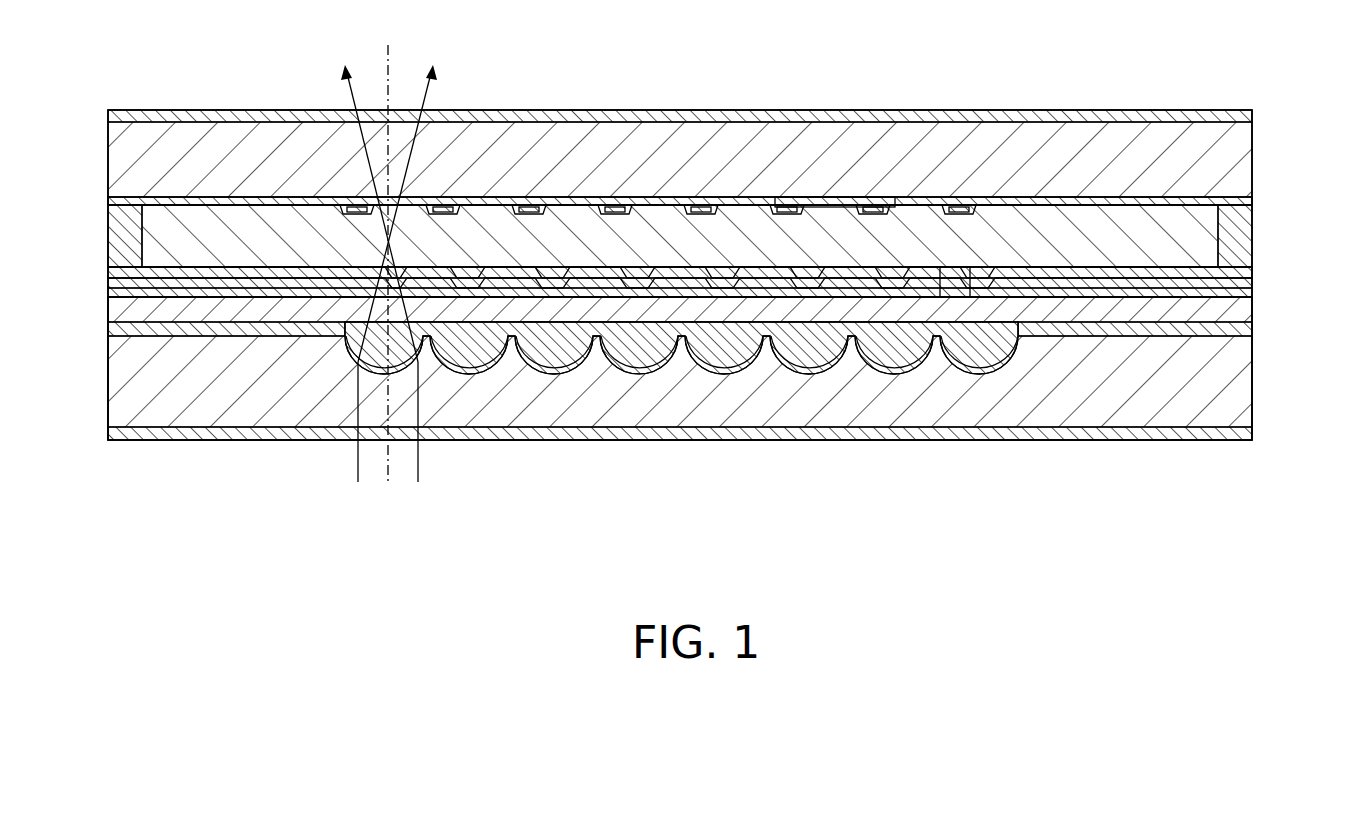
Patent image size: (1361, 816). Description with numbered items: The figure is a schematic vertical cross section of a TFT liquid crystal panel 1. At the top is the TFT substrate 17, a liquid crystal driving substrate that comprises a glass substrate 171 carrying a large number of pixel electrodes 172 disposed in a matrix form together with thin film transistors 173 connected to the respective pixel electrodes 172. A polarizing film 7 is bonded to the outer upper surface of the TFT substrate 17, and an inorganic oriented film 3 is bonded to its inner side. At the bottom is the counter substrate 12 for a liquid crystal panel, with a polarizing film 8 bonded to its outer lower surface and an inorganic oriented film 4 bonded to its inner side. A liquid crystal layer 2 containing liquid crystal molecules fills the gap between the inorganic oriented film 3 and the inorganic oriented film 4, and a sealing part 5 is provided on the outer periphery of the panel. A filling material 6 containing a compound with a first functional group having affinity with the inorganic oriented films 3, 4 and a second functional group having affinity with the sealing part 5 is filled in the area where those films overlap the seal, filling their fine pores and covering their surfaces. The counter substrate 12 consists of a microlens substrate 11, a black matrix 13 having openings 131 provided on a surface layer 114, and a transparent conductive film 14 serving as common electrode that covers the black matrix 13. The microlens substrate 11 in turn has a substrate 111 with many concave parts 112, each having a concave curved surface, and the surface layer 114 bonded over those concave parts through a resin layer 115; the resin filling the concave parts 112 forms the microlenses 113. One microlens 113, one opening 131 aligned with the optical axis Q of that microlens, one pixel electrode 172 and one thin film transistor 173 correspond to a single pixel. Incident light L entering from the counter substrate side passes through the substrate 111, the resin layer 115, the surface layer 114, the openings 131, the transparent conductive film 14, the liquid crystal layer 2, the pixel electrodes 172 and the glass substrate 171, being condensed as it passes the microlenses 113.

The liquid crystal panel 1 is at (1192, 92).
The TFT substrate 17 is at (98, 150).
The polarizing film 7 is at (1243, 116).
The glass substrate 171 is at (1232, 152).
The inorganic oriented film 3 is at (1244, 200).
The filling material 6 is at (1252, 206).
The sealing part 5 is at (1235, 232).
The liquid crystal layer 2 is at (163, 248).
The inorganic oriented film 4 is at (1240, 262).
The transparent conductive film 14 is at (1252, 274).
The black matrix 13 is at (1252, 293).
The opening 131 is at (958, 297).
The surface layer 114 is at (1235, 312).
The resin layer 115 is at (1240, 330).
The substrate with concave parts for microlenses 111 is at (1232, 383).
The concave part 112 is at (681, 407).
The microlens 113 is at (470, 372).
The polarizing film 8 is at (1238, 433).
The counter substrate 12 is at (1264, 404).
The microlens substrate 11 is at (85, 298).
The thin film transistor 173 is at (615, 205).
The pixel electrode 172 is at (812, 203).
The incident light L is at (387, 260).
The optical axis Q is at (388, 251).